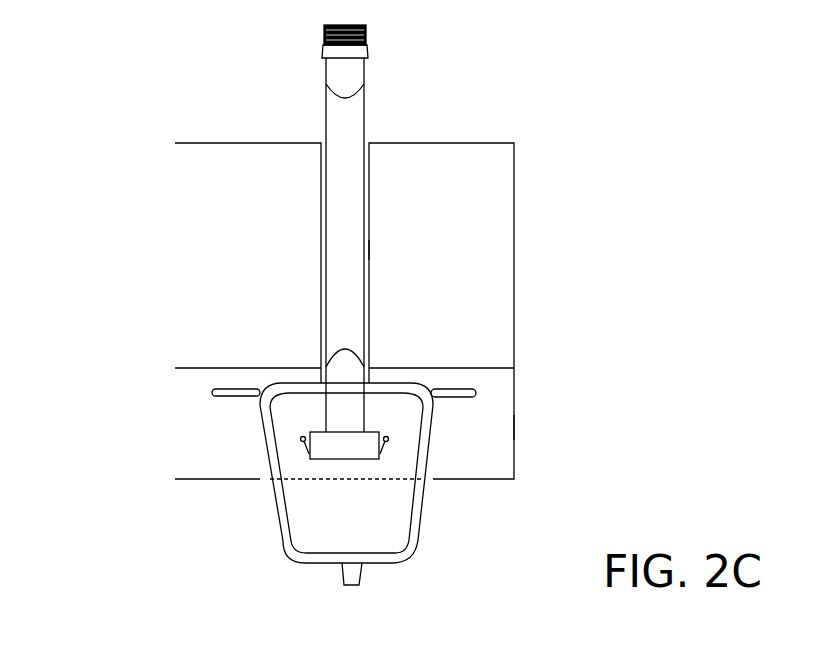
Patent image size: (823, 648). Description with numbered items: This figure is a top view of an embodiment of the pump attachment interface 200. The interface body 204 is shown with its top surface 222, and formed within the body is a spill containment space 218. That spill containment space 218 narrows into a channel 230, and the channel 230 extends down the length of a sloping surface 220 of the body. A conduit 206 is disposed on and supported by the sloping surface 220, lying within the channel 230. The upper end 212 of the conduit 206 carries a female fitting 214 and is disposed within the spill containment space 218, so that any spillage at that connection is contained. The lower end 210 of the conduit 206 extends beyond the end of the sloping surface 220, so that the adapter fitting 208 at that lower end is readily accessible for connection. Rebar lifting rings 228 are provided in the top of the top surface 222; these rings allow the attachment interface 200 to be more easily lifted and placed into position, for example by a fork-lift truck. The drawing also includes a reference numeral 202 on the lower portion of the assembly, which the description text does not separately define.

The pump attachment interface 200 is at (155, 542).
The drip tray / cup 202 is at (416, 562).
The interface body 204 is at (175, 272).
The conduit 206 is at (326, 100).
The adapter fitting 208 is at (326, 40).
The lower end 210 is at (408, 75).
The upper end 212 is at (284, 412).
The female fitting 214 is at (388, 441).
The spill containment space 218 is at (433, 472).
The sloping surface 220 is at (440, 253).
The top surface 222 is at (514, 428).
The rebar lifting rings 228 is at (212, 392).
The channel 230 is at (369, 248).